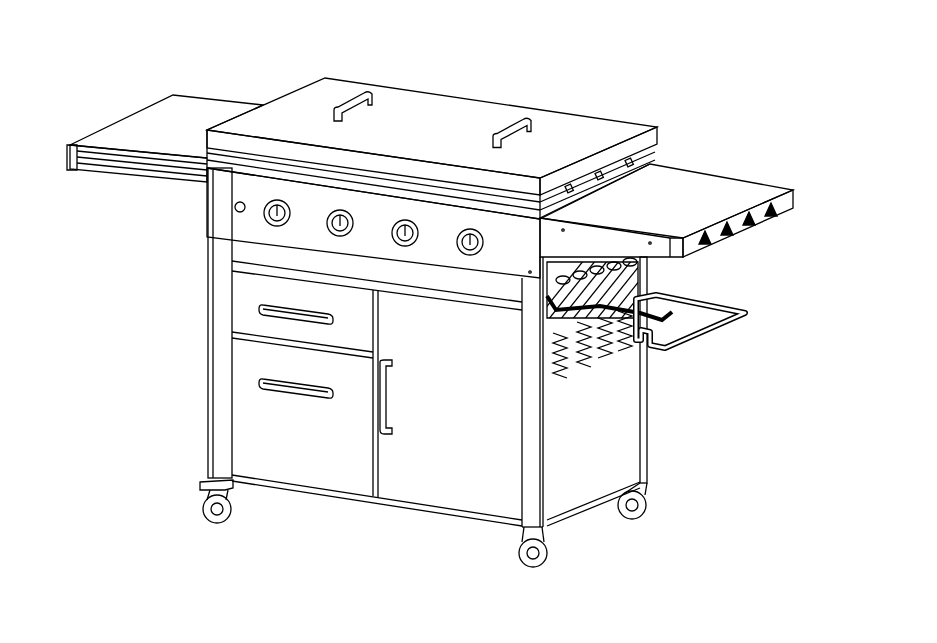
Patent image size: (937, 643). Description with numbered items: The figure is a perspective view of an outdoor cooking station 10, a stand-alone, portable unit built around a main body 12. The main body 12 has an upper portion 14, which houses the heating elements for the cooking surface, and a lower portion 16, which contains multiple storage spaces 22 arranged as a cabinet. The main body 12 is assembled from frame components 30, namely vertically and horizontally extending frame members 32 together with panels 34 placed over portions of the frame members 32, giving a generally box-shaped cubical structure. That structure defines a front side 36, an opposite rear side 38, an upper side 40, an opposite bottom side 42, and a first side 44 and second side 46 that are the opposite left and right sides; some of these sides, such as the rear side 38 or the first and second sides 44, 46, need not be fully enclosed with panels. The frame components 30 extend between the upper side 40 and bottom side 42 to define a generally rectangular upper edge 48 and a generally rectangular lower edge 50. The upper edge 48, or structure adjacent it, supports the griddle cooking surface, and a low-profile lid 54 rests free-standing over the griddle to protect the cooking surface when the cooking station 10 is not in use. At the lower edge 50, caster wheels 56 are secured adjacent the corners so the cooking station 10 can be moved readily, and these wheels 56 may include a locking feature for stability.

The cooking station 10 is at (738, 56).
The upper side 40 is at (481, 86).
The lid 54 is at (604, 118).
The upper portion 14 is at (181, 244).
The upper edge 48 is at (217, 168).
The lower portion 16 is at (178, 352).
The storage spaces 22 is at (393, 472).
The first side 44 is at (176, 390).
The front side 36 is at (172, 424).
The frame members 32 is at (548, 458).
The panels 34 is at (633, 411).
The main body 12 is at (692, 450).
The bottom side 42 is at (406, 522).
The lower edge 50 is at (482, 522).
The wheels 56 is at (547, 552).
The frame components 30 is at (551, 430).
The rear side 38 is at (697, 277).
The second side 46 is at (657, 371).